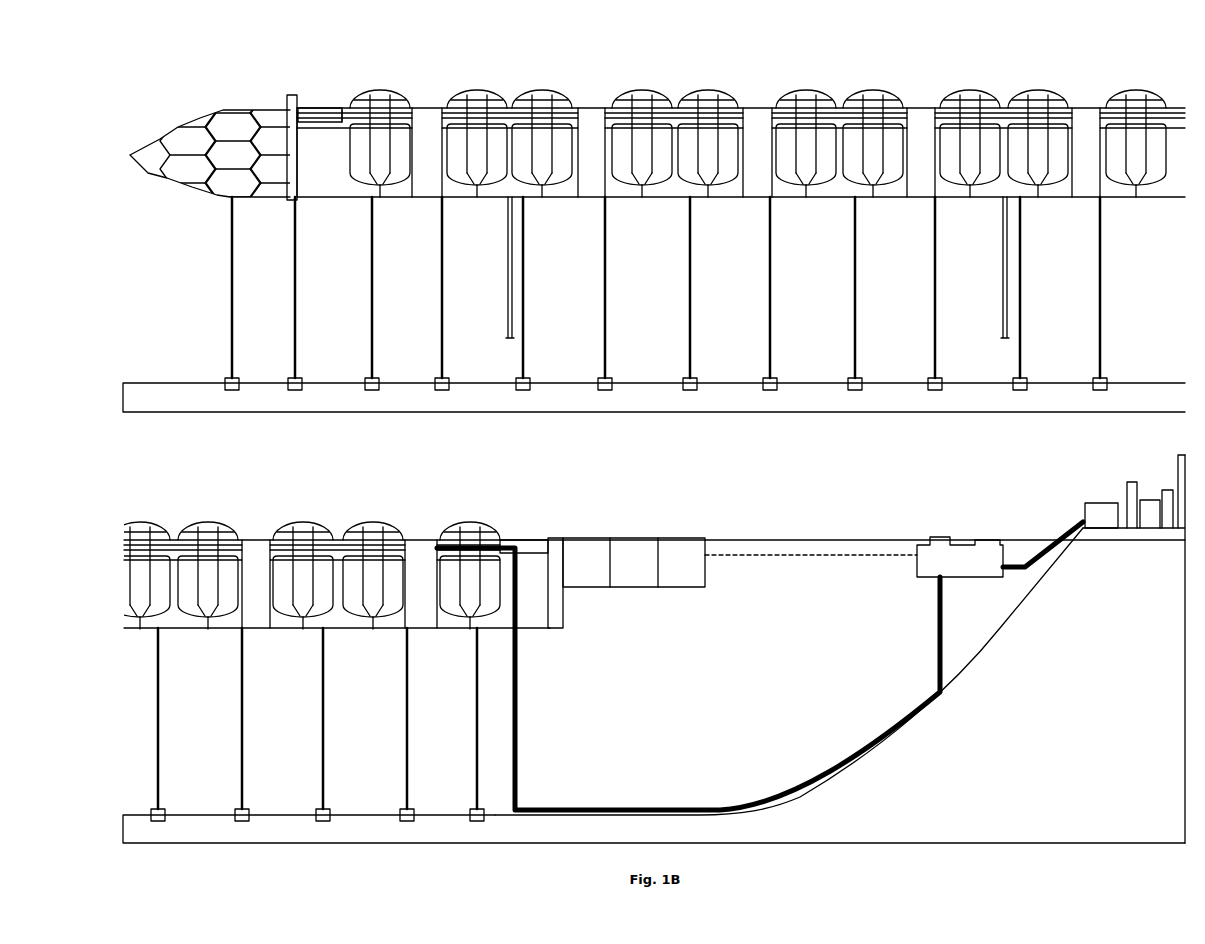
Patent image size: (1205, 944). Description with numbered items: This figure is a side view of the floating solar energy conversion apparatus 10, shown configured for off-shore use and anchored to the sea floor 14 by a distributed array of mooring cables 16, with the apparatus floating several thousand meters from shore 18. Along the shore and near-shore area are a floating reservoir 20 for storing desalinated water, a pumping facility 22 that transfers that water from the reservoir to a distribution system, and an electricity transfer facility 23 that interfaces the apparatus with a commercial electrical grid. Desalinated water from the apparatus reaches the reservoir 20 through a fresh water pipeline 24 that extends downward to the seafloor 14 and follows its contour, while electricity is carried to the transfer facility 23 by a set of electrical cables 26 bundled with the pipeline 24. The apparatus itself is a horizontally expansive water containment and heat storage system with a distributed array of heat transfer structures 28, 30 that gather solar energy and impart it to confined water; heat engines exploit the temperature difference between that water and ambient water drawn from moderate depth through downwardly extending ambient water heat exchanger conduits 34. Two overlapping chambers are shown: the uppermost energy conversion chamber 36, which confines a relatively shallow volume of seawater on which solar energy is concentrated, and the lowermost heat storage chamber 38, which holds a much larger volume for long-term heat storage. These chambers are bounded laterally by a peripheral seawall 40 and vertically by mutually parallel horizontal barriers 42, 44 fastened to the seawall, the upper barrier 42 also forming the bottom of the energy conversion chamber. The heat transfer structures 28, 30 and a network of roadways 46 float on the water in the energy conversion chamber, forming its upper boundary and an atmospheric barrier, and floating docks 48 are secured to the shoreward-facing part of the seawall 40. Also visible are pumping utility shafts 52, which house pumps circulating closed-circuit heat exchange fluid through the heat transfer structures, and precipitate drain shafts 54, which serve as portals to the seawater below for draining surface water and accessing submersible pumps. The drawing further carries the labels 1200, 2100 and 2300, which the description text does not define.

The floating solar energy conversion apparatus 10 is at (553, 404).
The sea floor 14 is at (1133, 385).
The mooring cables 16 is at (293, 298).
The shore 18 is at (1070, 535).
The floating reservoir 20 is at (965, 562).
The pumping facility 22 is at (1103, 517).
The electricity transfer facility 23 is at (1130, 485).
The fresh water pipeline 24 is at (520, 722).
The electrical cables 26 is at (520, 772).
The heat transfer structures 28 is at (377, 92).
The heat transfer structures 30 is at (238, 155).
The ambient water heat exchanger conduits 34 is at (514, 332).
The energy conversion chamber 36 is at (396, 115).
The heat storage chamber 38 is at (665, 190).
The peripheral seawall 40 is at (288, 95).
The horizontal barrier 42 is at (342, 120).
The horizontal barrier 44 is at (788, 200).
The roadways 46 is at (321, 115).
The floating docks 48 is at (680, 548).
The pumping utility shafts 52 is at (428, 120).
The precipitate drain shafts 54 is at (592, 120).
The foundation pads 1200 is at (292, 378).
The platform region 2100 is at (811, 348).
The base region 2300 is at (172, 398).